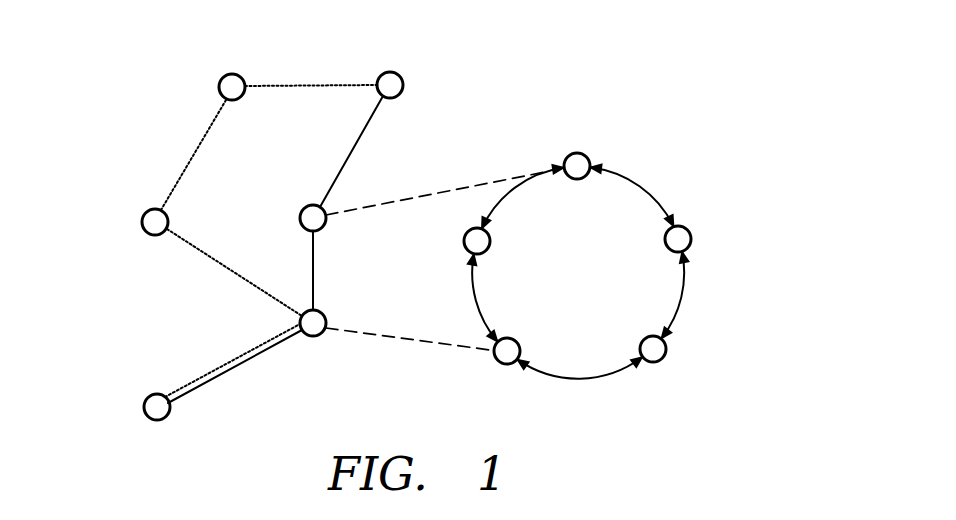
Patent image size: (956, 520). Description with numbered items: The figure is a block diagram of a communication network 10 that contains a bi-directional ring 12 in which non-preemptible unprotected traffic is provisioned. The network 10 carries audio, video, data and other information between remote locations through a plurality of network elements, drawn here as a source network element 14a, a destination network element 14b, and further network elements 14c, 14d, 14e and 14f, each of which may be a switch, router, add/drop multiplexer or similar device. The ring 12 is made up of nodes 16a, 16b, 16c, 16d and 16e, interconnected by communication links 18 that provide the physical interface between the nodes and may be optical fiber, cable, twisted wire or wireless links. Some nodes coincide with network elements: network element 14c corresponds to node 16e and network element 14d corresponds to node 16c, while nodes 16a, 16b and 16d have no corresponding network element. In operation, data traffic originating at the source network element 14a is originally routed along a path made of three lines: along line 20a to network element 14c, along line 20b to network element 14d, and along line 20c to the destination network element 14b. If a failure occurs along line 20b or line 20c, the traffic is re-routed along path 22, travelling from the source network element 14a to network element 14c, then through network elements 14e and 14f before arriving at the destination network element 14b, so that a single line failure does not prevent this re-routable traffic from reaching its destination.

The communication network 10 is at (600, 65).
The bi-directional ring 12 is at (722, 318).
The source network element 14a is at (143, 408).
The destination network element 14b is at (404, 86).
The network element 14c is at (313, 338).
The network element 14d is at (300, 212).
The network element 14e is at (141, 221).
The network element 14f is at (219, 87).
The node 16a is at (665, 362).
The node 16b is at (693, 236).
The node 16c is at (576, 184).
The node 16d is at (462, 240).
The node 16e is at (518, 340).
The communication links 18 is at (644, 184).
The line 20a is at (220, 382).
The line 20b is at (314, 271).
The line 20c is at (350, 152).
The path 22 is at (312, 84).